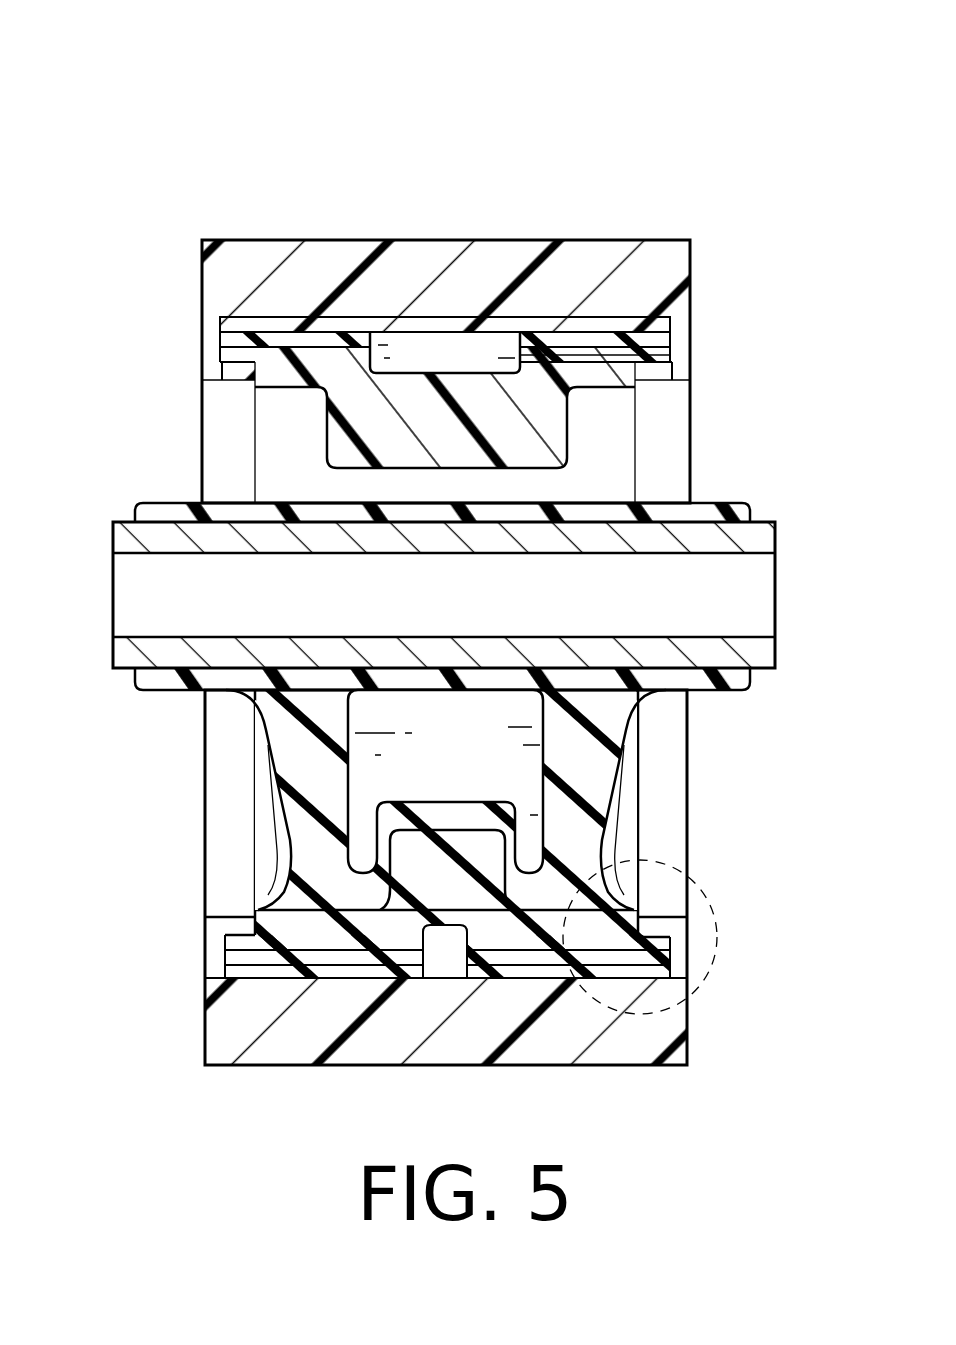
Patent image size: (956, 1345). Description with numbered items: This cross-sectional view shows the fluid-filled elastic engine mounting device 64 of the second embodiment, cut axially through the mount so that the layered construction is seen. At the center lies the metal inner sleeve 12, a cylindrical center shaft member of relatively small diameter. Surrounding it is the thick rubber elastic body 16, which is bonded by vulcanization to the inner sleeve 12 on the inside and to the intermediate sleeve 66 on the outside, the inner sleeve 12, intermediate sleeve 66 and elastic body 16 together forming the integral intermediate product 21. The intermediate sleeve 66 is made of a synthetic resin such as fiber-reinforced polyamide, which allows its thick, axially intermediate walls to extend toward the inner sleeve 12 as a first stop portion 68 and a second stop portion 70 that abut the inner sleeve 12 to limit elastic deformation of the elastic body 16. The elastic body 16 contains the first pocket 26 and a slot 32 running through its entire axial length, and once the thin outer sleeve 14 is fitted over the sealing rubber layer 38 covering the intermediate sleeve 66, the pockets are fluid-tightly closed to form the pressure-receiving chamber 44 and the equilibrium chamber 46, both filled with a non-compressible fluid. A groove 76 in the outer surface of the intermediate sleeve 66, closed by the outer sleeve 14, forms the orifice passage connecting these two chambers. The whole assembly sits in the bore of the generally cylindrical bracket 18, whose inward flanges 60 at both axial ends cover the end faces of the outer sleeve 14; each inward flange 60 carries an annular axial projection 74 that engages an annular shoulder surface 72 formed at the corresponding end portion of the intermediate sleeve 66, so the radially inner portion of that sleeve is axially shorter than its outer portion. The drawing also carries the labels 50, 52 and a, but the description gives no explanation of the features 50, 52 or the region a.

The inner sleeve 12 is at (155, 533).
The outer sleeve 14 is at (633, 318).
The elastic body 16 is at (283, 728).
The bracket 18 is at (216, 212).
The integral intermediate product 21 is at (652, 803).
The first pocket 26 is at (363, 748).
The slot 32 is at (528, 483).
The sealing rubber layer 38 is at (293, 335).
The pressure-receiving chamber 44 is at (503, 747).
The equilibrium chamber 46 is at (493, 345).
The gap 50 is at (398, 292).
The housing cap 52 is at (578, 240).
The inward flange 60 is at (682, 332).
The fluid-filled elastic engine mounting device 64 is at (222, 140).
The intermediate sleeve 66 is at (345, 943).
The first stop portion 68 is at (420, 860).
The second stop portion 70 is at (340, 452).
The annular shoulder surface 72 is at (236, 930).
The annular axial projection 74 is at (232, 375).
The groove 76 is at (440, 935).
The detail region a is at (735, 1000).